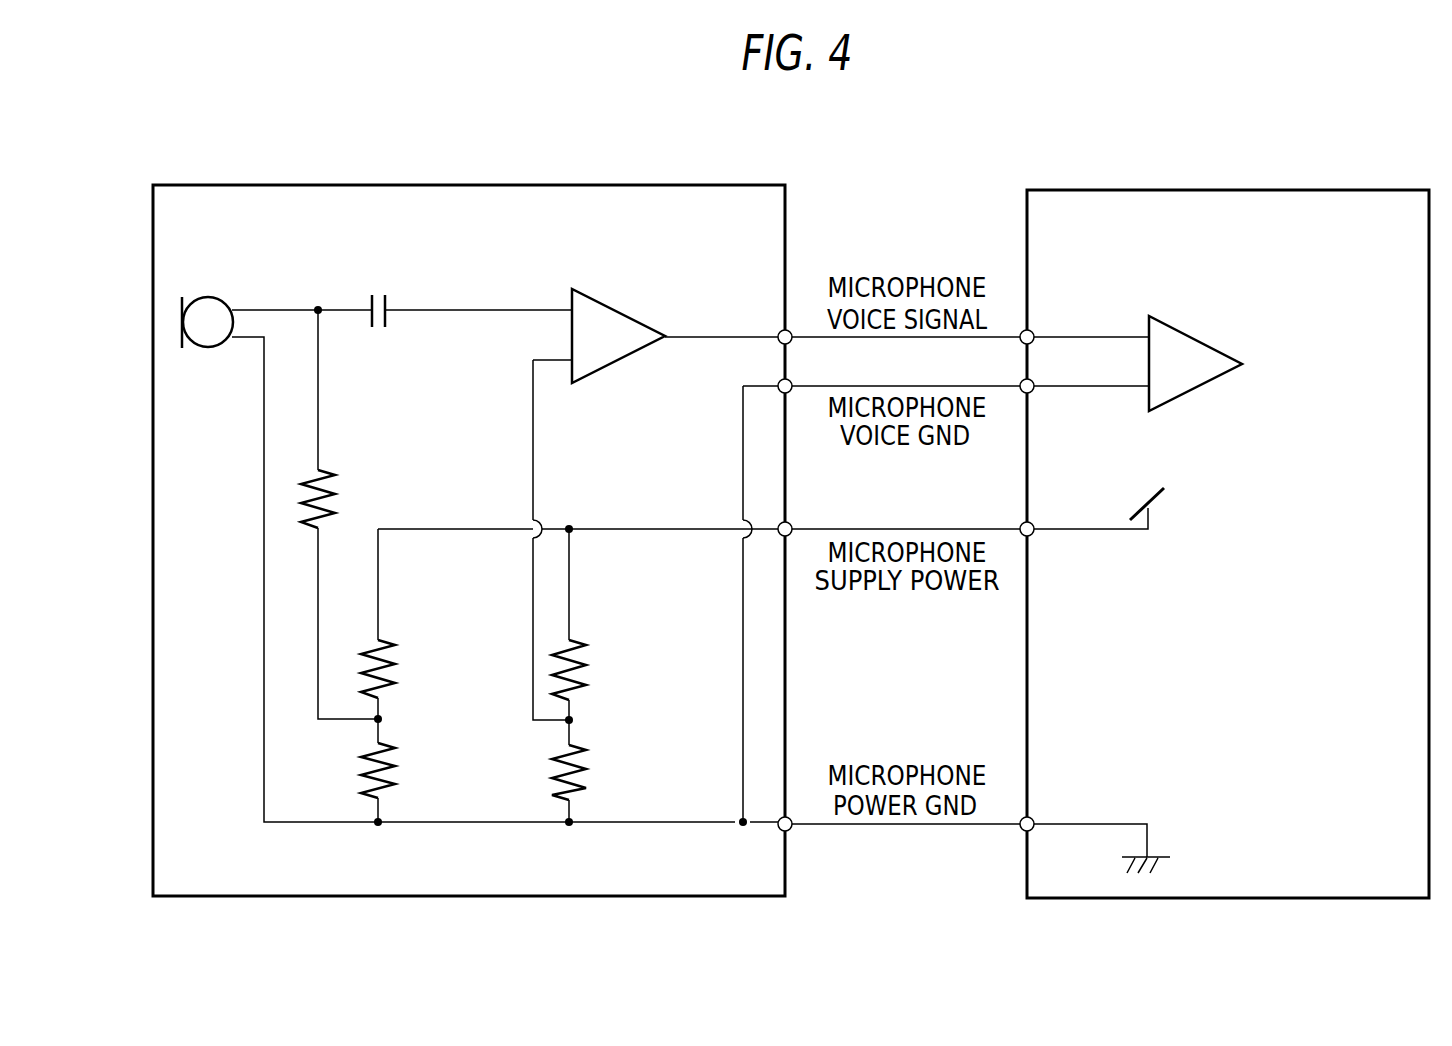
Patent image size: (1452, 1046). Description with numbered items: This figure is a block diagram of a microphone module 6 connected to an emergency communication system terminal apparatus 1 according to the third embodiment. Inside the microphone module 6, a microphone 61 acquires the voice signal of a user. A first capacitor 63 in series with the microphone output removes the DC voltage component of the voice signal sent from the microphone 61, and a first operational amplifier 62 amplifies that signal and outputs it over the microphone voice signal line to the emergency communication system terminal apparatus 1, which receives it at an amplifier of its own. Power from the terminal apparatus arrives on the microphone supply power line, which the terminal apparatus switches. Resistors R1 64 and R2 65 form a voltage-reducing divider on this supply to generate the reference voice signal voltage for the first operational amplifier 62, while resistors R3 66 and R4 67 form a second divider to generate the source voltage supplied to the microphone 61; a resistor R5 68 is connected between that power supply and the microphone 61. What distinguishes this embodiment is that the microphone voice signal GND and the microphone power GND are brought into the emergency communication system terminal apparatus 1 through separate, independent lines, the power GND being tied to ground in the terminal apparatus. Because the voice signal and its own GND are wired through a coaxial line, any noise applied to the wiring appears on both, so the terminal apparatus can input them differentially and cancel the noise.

The emergency communication system terminal apparatus 1 is at (1230, 190).
The microphone module 6 is at (472, 185).
The microphone 61 is at (214, 298).
The first operational amplifier 62 is at (620, 312).
The first capacitor 63 is at (383, 296).
The resistor R1 64 is at (587, 663).
The resistor R2 65 is at (587, 763).
The resistor R3 66 is at (396, 663).
The resistor R4 67 is at (396, 763).
The resistor R5 68 is at (336, 493).